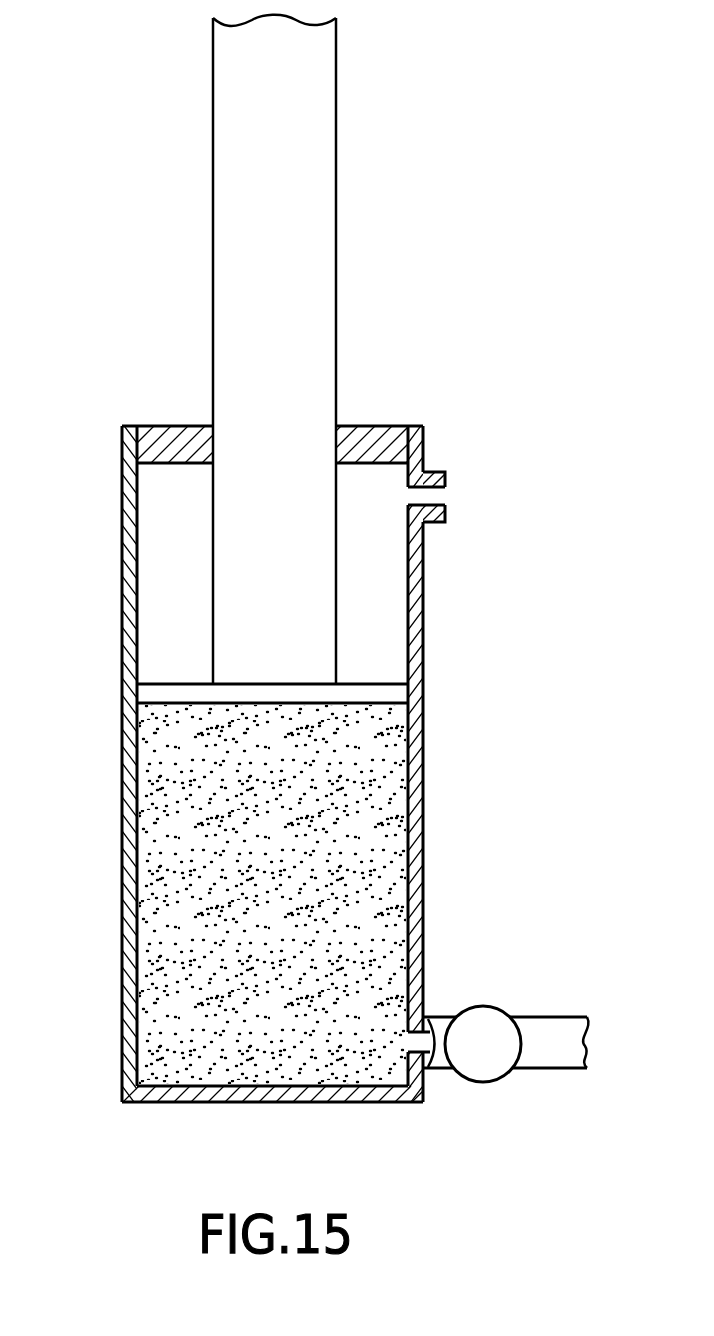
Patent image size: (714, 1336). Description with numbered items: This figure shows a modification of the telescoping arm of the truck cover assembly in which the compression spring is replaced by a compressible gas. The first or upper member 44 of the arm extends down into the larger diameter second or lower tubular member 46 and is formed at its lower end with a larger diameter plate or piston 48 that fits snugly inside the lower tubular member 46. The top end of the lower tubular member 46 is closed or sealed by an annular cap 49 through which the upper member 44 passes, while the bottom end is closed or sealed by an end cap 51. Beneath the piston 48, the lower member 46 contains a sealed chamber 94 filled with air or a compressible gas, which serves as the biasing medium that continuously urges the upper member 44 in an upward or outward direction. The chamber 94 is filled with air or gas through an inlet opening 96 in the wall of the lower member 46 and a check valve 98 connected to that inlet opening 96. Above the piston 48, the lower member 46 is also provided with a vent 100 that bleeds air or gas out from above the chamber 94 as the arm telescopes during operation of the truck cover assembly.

The first or upper member 44 is at (322, 231).
The second or lower tubular member 46 is at (418, 556).
The piston 48 is at (150, 692).
The annular cap 49 is at (375, 432).
The end cap 51 is at (270, 1104).
The sealed chamber 94 is at (157, 903).
The inlet opening 96 is at (437, 1028).
The check valve 98 is at (483, 1083).
The vent 100 is at (447, 499).